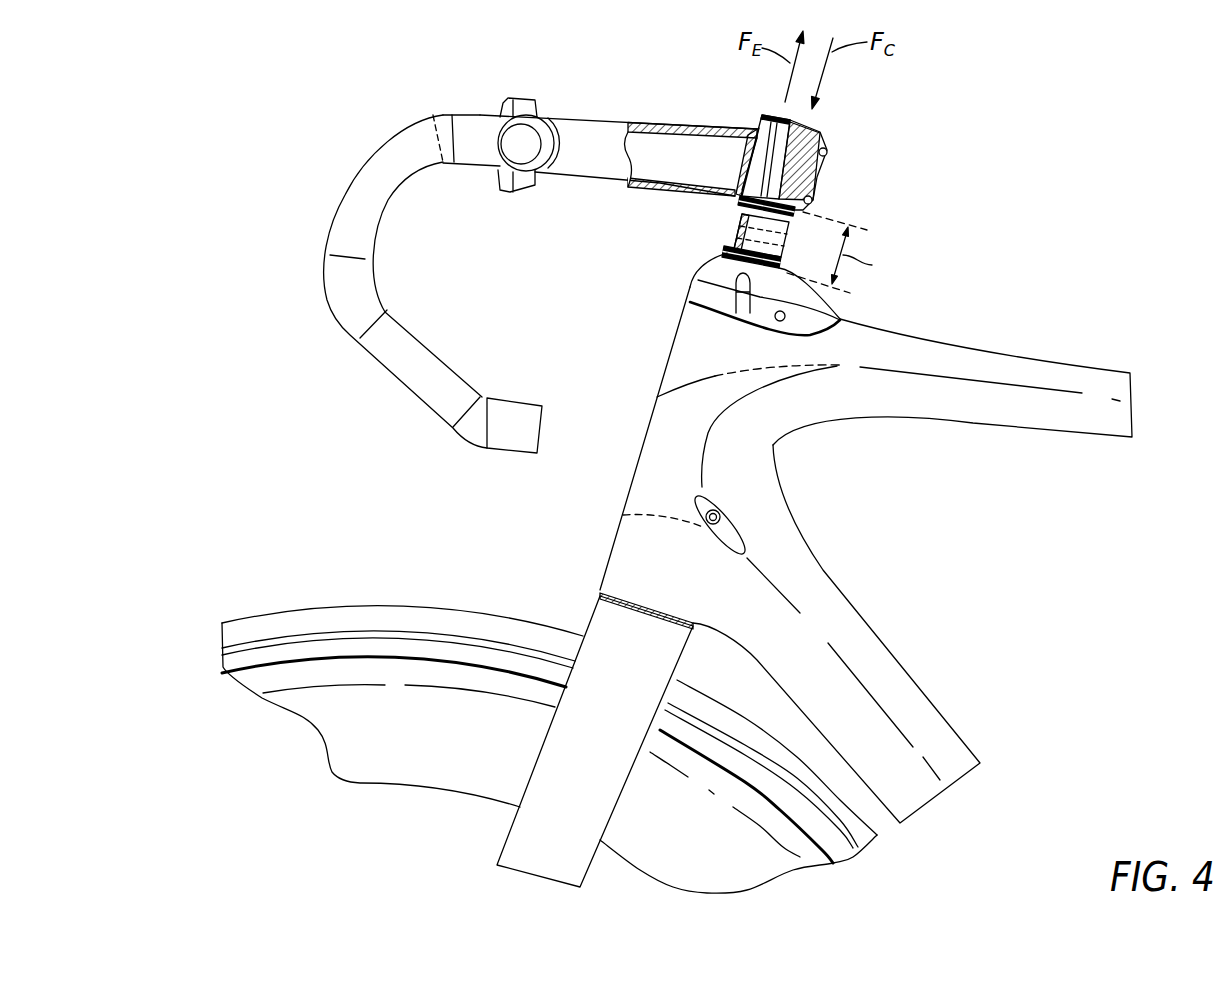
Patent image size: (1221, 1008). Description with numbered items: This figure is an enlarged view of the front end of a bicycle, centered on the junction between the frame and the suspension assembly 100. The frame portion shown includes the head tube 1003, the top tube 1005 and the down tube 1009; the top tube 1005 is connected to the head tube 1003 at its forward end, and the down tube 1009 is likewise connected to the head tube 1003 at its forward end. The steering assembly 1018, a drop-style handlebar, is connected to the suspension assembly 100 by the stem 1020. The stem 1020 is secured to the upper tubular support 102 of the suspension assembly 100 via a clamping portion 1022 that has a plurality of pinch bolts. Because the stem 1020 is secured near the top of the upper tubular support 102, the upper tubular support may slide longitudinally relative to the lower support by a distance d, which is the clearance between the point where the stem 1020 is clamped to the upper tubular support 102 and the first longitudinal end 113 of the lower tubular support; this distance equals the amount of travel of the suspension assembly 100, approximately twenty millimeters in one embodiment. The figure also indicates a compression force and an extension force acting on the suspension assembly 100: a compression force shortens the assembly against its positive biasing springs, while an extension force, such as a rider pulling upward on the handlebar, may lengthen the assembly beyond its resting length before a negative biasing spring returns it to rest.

The steering assembly 1018 is at (347, 180).
The stem 1020 is at (677, 124).
The upper tubular support 102 is at (820, 135).
The clamping portion 1022 is at (823, 150).
The suspension assembly 100 is at (692, 222).
The first longitudinal end 113 is at (717, 248).
The head tube 1003 is at (652, 461).
The top tube 1005 is at (967, 350).
The down tube 1009 is at (873, 630).